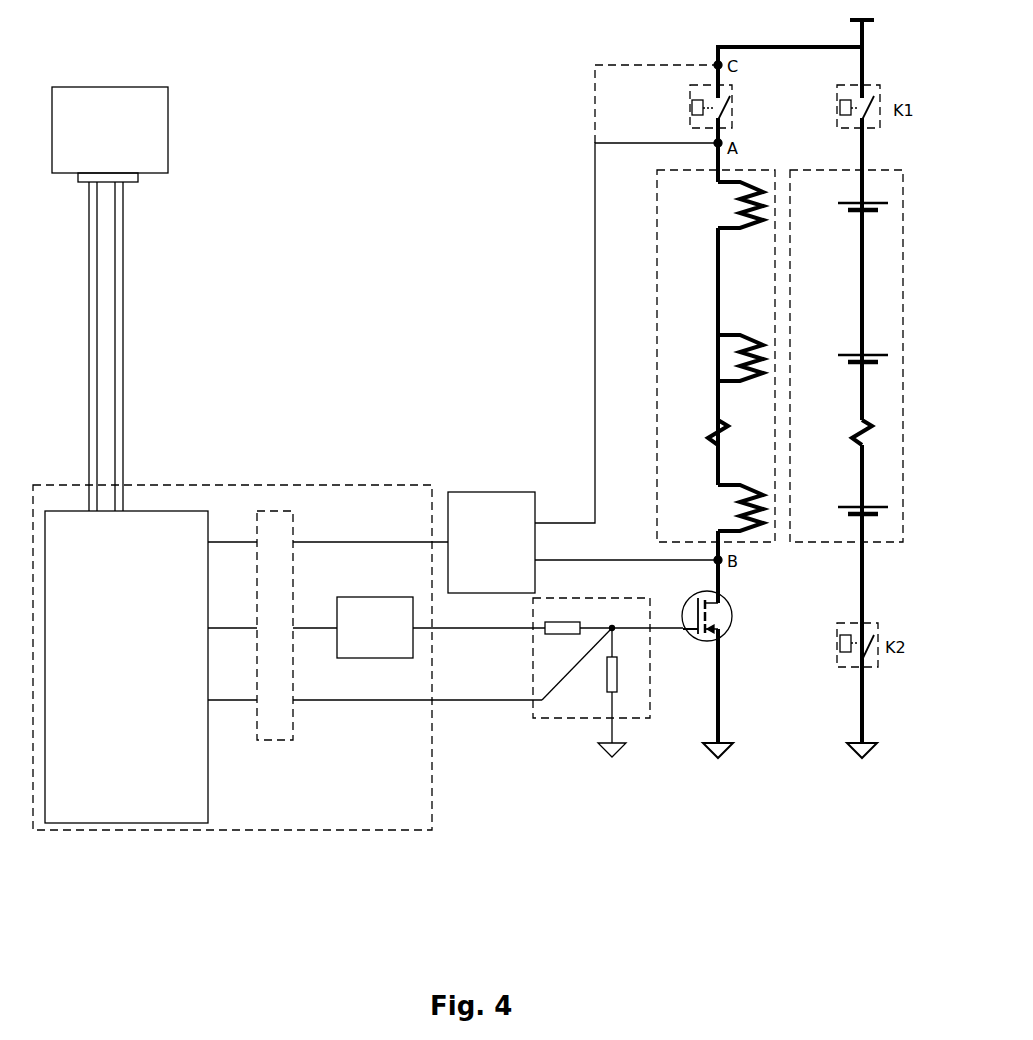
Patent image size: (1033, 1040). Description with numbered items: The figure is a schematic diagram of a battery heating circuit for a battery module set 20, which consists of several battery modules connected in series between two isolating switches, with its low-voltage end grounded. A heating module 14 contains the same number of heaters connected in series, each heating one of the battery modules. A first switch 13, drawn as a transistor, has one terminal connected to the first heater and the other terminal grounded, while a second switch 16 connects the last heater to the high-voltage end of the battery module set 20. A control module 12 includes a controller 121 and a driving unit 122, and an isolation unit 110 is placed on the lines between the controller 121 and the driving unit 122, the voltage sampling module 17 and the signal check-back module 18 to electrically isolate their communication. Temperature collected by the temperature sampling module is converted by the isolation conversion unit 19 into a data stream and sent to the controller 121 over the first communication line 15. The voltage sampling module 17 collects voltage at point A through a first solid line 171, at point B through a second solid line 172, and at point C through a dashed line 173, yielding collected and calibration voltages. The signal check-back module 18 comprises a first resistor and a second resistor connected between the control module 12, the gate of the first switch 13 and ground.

The control module 12 is at (373, 484).
The first switch 13 is at (727, 633).
The heating module 14 is at (657, 273).
The first communication line 15 is at (123, 300).
The second switch 16 is at (692, 106).
The voltage sampling module 17 is at (490, 491).
The signal check-back module 18 is at (533, 720).
The isolation conversion unit 19 is at (130, 183).
The battery module set 20 is at (888, 543).
The isolation unit 110 is at (260, 509).
The controller 121 is at (105, 823).
The driving unit 122 is at (350, 596).
The first solid line 171 is at (625, 145).
The second solid line 172 is at (697, 563).
The dashed line 173 is at (603, 63).